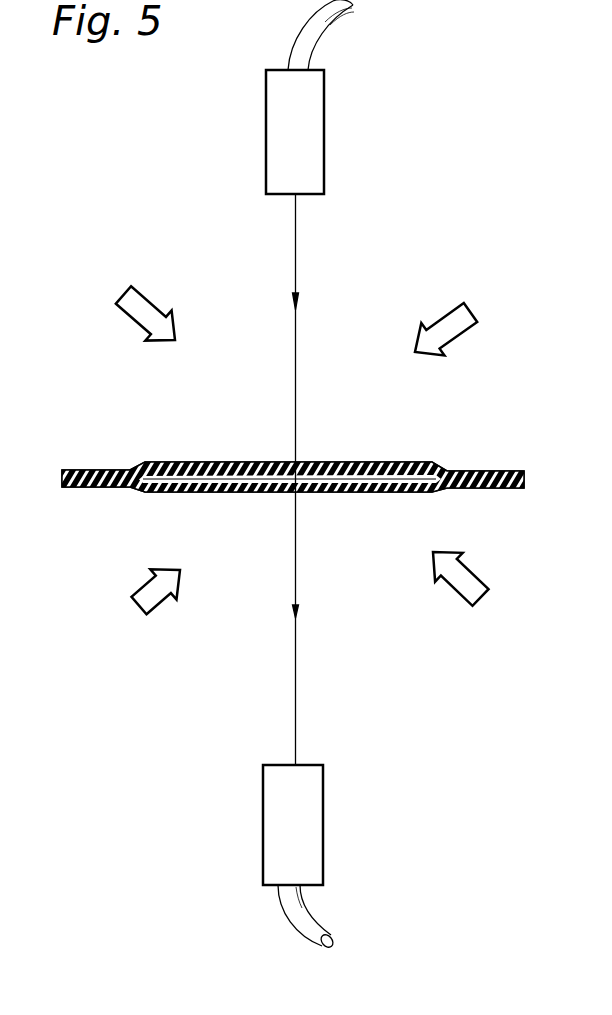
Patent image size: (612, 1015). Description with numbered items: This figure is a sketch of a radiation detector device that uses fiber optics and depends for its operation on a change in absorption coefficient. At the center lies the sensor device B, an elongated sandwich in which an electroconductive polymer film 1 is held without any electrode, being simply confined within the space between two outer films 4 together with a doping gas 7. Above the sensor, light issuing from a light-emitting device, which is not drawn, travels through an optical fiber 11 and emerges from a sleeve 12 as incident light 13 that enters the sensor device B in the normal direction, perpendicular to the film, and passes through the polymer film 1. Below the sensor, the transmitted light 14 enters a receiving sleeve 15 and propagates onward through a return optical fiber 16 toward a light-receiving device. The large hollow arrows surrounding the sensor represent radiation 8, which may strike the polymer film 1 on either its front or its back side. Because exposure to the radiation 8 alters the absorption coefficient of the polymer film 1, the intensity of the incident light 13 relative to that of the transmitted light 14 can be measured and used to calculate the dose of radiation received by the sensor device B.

The electroconductive polymer film 1 is at (228, 493).
The outer films 4 is at (393, 463).
The doping gas 7 is at (200, 470).
The radiation 8 is at (137, 315).
The optical fiber 11 is at (320, 38).
The sleeve 12 is at (305, 133).
The incident light 13 is at (297, 327).
The transmitted light 14 is at (297, 580).
The receiving sleeve 15 is at (308, 832).
The return optical fiber 16 is at (303, 907).
The sensor device B is at (450, 444).